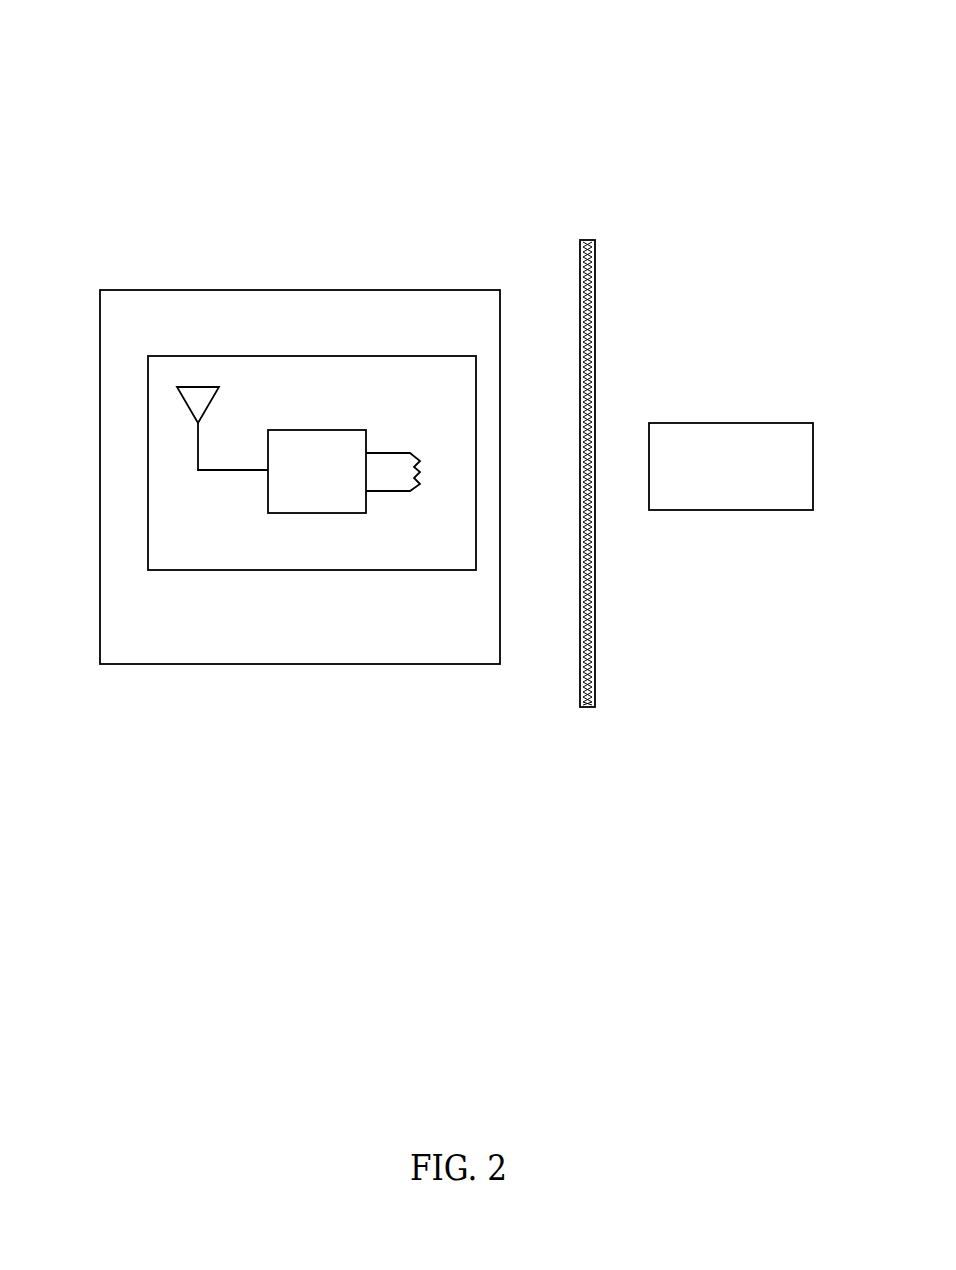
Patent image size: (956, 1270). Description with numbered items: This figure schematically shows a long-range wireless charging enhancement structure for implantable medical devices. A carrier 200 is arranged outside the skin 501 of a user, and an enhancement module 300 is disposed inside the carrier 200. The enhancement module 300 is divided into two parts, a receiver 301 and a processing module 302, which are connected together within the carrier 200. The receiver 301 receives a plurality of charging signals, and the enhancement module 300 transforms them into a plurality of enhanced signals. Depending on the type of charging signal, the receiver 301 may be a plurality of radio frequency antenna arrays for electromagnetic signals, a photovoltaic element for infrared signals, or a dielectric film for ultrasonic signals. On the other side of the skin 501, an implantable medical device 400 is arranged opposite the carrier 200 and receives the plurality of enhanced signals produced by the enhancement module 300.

The carrier 200 is at (285, 289).
The enhancement module 300 is at (419, 570).
The receiver 301 is at (190, 408).
The processing module 302 is at (320, 495).
The skin 501 is at (588, 240).
The implantable medical device 400 is at (753, 493).